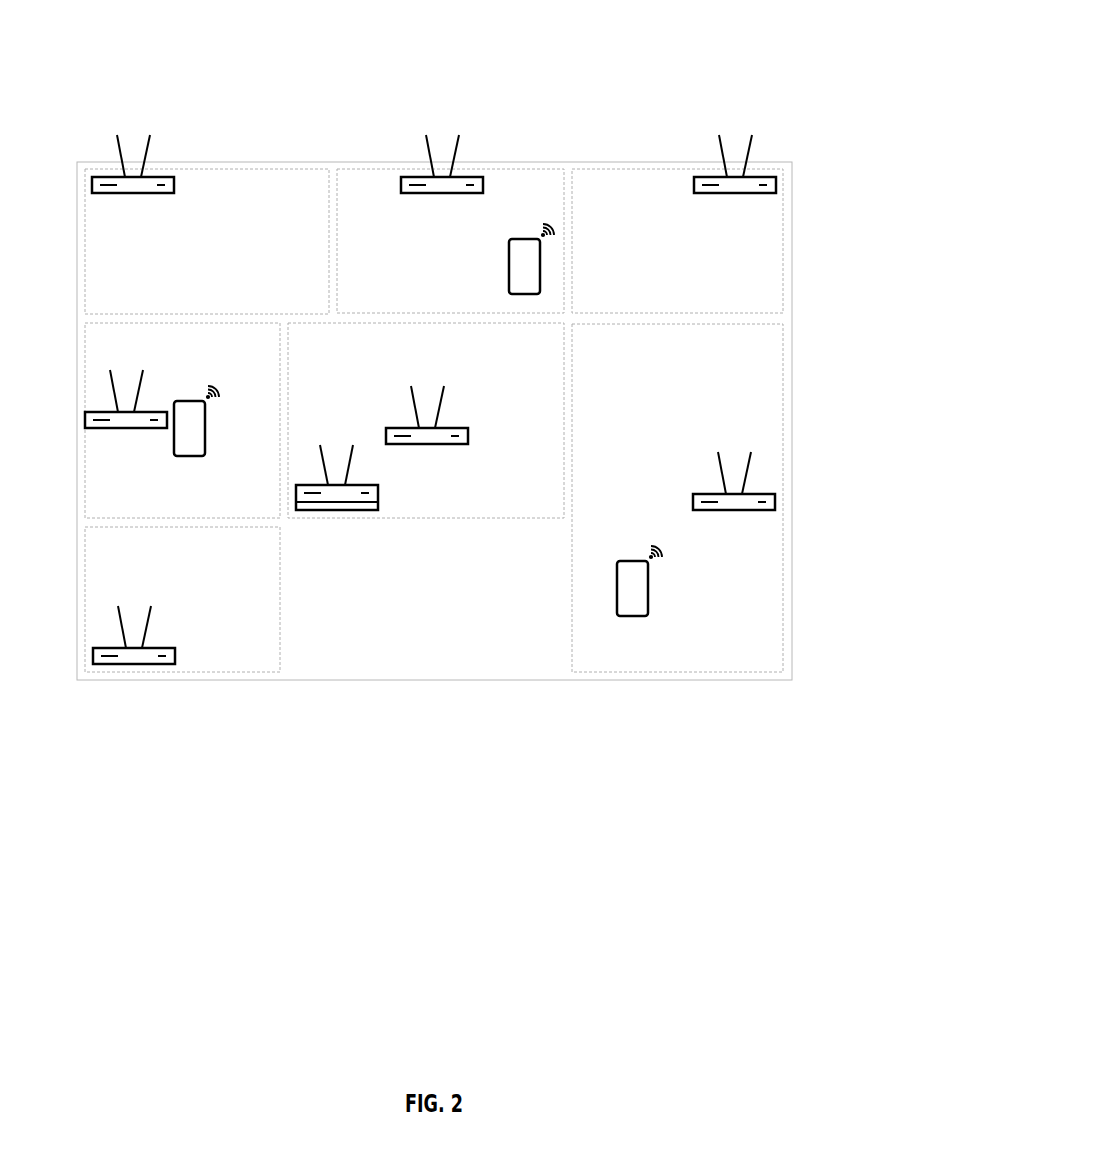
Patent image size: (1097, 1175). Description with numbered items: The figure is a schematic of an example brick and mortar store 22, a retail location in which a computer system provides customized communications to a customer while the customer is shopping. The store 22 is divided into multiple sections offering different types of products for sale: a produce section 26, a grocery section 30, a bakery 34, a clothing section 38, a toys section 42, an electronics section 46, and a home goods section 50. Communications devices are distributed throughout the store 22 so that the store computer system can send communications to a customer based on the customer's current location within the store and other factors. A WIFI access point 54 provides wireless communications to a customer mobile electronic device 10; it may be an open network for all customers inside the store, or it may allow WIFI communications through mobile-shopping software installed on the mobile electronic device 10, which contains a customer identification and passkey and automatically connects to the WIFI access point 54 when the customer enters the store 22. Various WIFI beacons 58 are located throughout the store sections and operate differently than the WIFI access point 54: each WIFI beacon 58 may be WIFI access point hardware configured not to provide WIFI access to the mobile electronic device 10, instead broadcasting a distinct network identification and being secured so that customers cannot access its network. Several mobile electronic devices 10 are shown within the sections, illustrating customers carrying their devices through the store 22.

The mobile electronic device 10 is at (550, 250).
The store 22 is at (698, 40).
The produce section 26 is at (101, 545).
The grocery section 30 is at (101, 464).
The bakery 34 is at (101, 268).
The clothing section 38 is at (361, 366).
The toys section 42 is at (520, 168).
The electronics section 46 is at (780, 235).
The home goods section 50 is at (780, 382).
The WIFI access point 54 is at (296, 477).
The WIFI beacons 58 is at (91, 178).